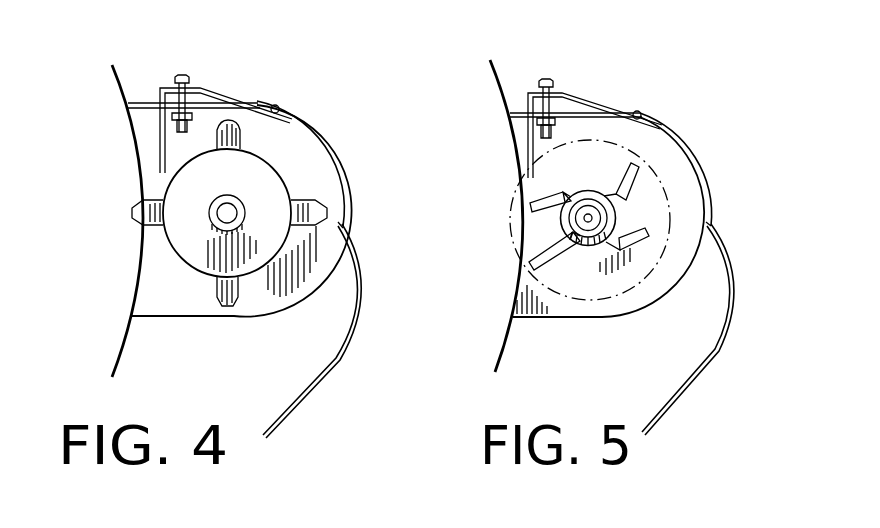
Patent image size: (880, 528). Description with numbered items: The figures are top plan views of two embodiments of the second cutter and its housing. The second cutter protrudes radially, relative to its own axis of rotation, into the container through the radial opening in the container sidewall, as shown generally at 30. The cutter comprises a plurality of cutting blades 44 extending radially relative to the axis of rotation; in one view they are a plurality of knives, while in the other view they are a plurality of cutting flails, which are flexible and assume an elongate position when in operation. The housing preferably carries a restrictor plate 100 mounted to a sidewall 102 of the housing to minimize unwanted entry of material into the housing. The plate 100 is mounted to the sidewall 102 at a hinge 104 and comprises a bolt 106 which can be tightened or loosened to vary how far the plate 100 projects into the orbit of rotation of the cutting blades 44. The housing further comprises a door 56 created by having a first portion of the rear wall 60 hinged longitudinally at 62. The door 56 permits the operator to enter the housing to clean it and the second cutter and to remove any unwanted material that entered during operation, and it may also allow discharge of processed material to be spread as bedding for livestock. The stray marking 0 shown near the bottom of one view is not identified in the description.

In FIG. 4, the protrusion of the second cutter into the container 30 is at (112, 224).
In FIG. 5, the protrusion of the second cutter into the container 30 is at (513, 228).
In FIG. 4, the cutting blades 44 is at (236, 124).
In FIG. 5, the cutting blades 44 is at (636, 163).
In FIG. 4, the door 56 is at (365, 300).
In FIG. 5, the door 56 is at (742, 305).
In FIG. 4, the rear wall 60 is at (324, 153).
In FIG. 5, the rear wall 60 is at (700, 173).
In FIG. 4, the longitudinal hinge 62 is at (347, 218).
In FIG. 5, the longitudinal hinge 62 is at (716, 215).
In FIG. 4, the restrictor plate 100 is at (212, 88).
In FIG. 5, the restrictor plate 100 is at (576, 92).
In FIG. 4, the sidewall of housing 102 is at (310, 128).
In FIG. 5, the sidewall of housing 102 is at (680, 130).
In FIG. 4, the hinge 104 is at (276, 106).
In FIG. 5, the hinge 104 is at (637, 111).
In FIG. 4, the bolt 106 is at (180, 74).
In FIG. 5, the bolt 106 is at (546, 78).
In FIG. 5, the housing bottom 0 is at (578, 293).